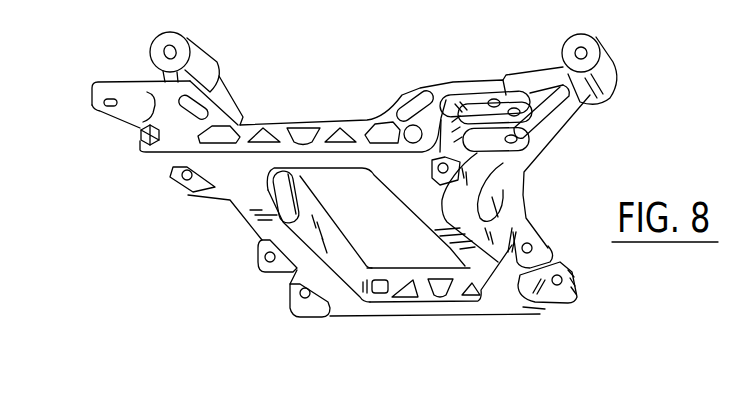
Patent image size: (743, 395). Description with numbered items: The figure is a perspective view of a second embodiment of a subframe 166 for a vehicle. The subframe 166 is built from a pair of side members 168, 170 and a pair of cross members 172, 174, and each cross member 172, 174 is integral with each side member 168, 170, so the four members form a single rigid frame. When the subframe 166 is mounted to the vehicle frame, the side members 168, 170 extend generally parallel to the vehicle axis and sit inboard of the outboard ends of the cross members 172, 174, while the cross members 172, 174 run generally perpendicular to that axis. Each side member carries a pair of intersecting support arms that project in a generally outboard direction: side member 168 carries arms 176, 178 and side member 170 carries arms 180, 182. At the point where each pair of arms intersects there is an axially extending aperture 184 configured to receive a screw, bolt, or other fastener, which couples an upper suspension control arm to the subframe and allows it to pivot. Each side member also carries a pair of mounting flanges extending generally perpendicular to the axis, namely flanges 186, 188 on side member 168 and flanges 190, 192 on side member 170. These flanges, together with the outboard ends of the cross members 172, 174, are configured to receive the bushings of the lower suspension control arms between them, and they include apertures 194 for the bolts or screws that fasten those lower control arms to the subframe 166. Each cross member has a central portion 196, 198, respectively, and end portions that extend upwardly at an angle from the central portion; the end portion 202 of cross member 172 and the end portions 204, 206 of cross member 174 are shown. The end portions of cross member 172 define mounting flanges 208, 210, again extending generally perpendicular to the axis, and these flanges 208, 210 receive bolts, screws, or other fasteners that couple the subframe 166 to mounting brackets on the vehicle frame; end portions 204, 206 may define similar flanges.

The subframe 166 is at (352, 53).
The side member 168 is at (265, 230).
The side member 170 is at (428, 220).
The cross member 172 is at (283, 120).
The cross member 174 is at (442, 306).
The support arm 176 is at (543, 64).
The support arm 178 is at (565, 117).
The support arm 180 is at (148, 78).
The support arm 182 is at (223, 102).
The aperture 184 is at (583, 52).
The mounting flange 186 is at (192, 197).
The mounting flange 188 is at (268, 278).
The mounting flange 190 is at (498, 186).
The mounting flange 192 is at (550, 258).
The aperture 194 is at (517, 222).
The central portion 196 is at (300, 163).
The central portion 198 is at (423, 268).
The end portion 202 is at (400, 93).
The end portion 204 is at (340, 311).
The end portion 206 is at (540, 314).
The mounting flange 208 is at (132, 113).
The mounting flange 210 is at (487, 88).